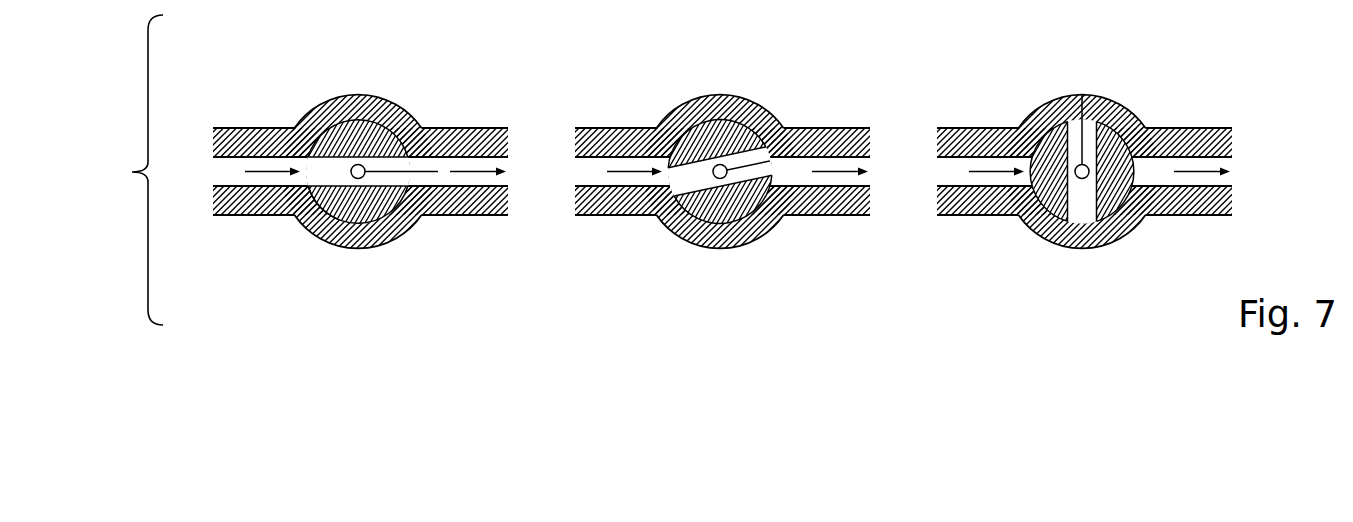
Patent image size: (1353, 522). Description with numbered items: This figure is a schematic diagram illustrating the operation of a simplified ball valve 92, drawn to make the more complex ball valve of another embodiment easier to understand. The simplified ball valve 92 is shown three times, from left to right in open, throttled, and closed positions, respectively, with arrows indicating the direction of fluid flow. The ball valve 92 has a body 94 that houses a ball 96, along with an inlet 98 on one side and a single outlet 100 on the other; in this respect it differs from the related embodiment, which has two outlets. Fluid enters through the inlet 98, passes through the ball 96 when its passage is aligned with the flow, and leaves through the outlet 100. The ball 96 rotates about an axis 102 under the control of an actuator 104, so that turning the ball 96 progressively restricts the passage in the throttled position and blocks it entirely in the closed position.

The ball valve 92 is at (700, 167).
The body 94 is at (373, 97).
The ball 96 is at (403, 137).
The inlet 98 is at (281, 156).
The outlet 100 is at (472, 176).
The axis 102 is at (323, 213).
The actuator 104 is at (413, 176).